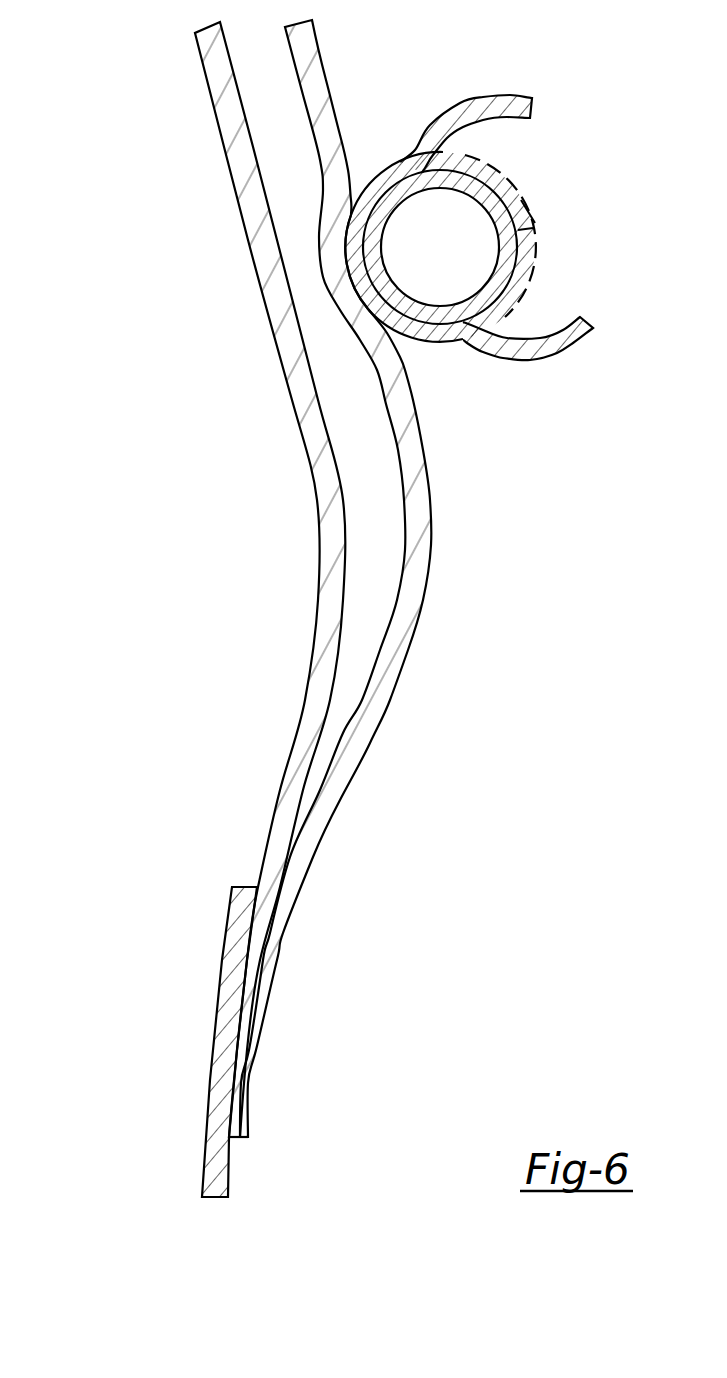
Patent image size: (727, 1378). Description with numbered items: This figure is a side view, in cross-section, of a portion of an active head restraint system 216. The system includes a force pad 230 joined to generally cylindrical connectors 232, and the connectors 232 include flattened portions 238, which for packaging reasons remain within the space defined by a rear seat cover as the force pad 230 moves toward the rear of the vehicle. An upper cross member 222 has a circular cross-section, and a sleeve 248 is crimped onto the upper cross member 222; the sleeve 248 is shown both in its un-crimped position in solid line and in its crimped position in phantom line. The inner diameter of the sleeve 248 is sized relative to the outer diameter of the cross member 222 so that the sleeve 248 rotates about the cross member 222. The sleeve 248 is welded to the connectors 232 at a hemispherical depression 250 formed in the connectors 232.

The active head restraint system 216 is at (126, 122).
The upper cross member 222 is at (500, 217).
The force pad 230 is at (227, 1165).
The connectors 232 is at (417, 507).
The flattened portions 238 is at (275, 962).
The sleeve 248 is at (488, 117).
The hemispherical depression 250 is at (352, 283).